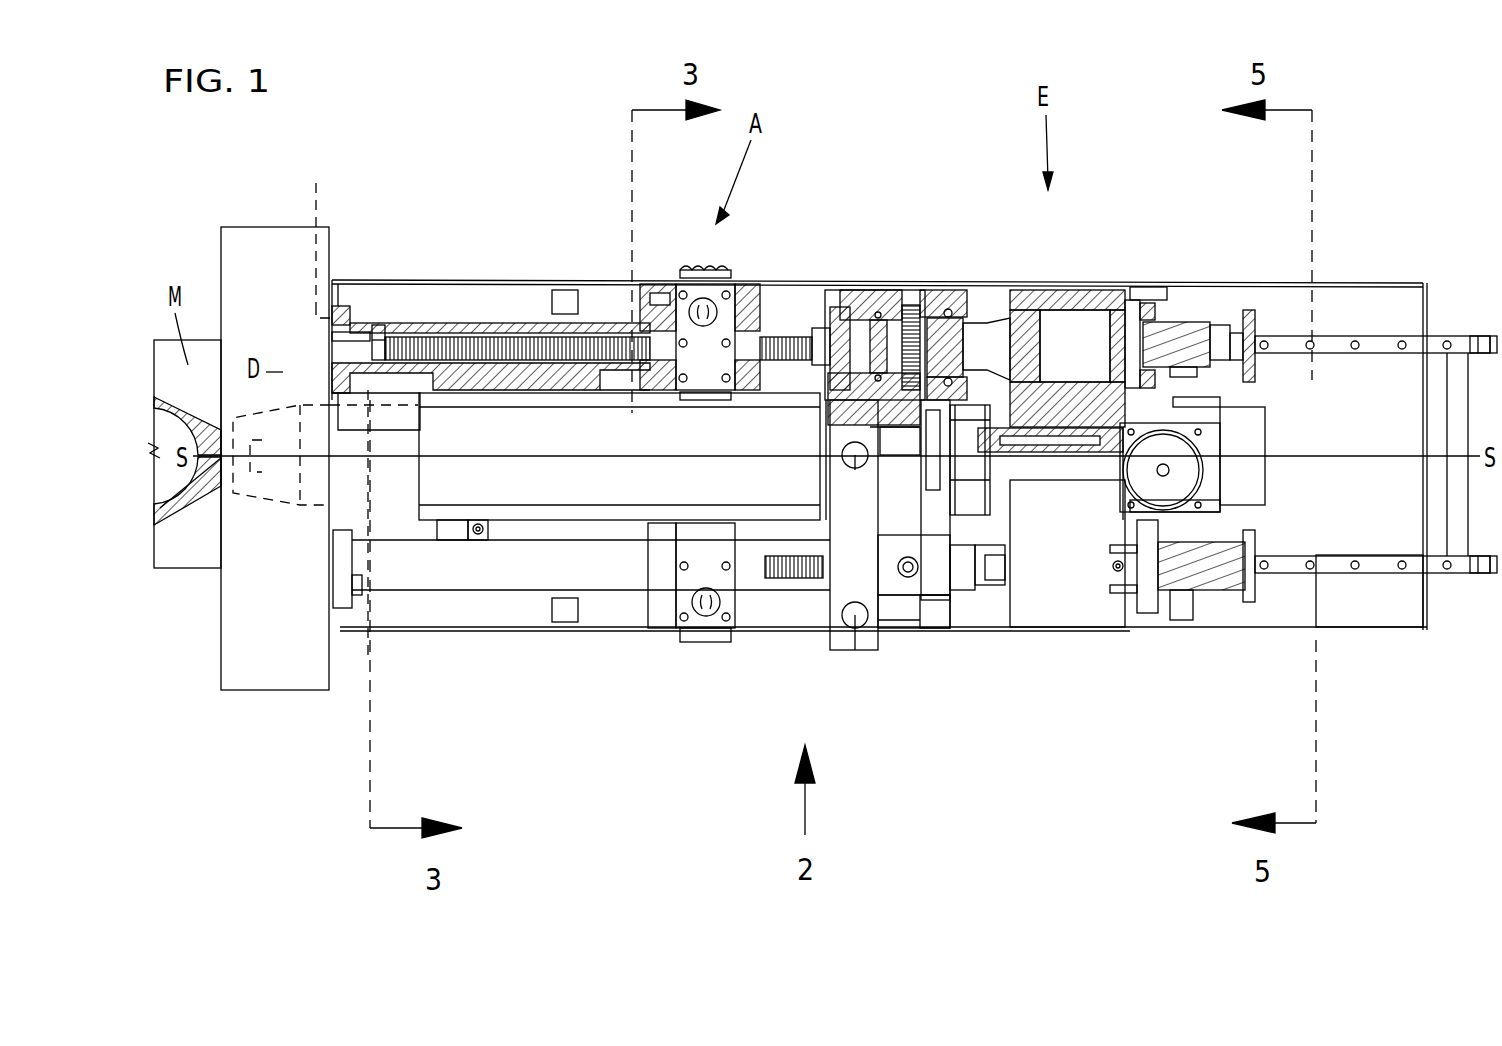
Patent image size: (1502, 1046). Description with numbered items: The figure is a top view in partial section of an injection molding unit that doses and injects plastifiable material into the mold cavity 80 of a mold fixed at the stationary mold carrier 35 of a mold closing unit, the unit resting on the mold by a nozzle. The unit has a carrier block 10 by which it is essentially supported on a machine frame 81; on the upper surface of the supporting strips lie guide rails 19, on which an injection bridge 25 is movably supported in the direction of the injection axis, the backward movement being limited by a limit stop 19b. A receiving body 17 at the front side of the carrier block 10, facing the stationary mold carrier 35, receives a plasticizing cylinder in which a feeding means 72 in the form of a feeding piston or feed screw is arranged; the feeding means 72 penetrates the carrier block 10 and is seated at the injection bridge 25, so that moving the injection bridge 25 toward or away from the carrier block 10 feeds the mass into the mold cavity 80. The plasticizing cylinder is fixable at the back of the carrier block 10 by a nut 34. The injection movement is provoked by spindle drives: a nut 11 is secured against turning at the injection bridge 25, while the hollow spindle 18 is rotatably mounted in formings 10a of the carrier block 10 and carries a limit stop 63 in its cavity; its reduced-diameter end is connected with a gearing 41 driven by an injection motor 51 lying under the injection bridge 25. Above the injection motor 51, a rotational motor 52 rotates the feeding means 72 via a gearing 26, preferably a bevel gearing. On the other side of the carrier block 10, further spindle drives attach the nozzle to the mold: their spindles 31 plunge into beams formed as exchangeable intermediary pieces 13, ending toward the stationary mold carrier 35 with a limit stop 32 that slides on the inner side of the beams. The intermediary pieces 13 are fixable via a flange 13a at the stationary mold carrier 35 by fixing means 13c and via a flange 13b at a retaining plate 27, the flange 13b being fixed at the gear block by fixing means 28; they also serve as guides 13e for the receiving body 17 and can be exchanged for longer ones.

The carrier block 10 is at (880, 290).
The formings of the carrier block 10a is at (950, 628).
The nut 11 is at (1122, 280).
The intermediary pieces 13 is at (438, 318).
The flange 13a is at (344, 318).
The flange 13b is at (640, 300).
The fixing means 13c is at (316, 196).
The guides 13e is at (518, 320).
The receiving body 17 is at (727, 446).
The spindle 18 is at (1202, 320).
The guide rails 19 is at (1380, 334).
The limit stop 19b is at (1484, 334).
The injection bridge 25 is at (1035, 290).
The gearing 26 is at (1232, 424).
The retaining plate 27 is at (748, 284).
The fixing means 28 is at (652, 283).
The spindles 31 is at (460, 330).
The limit stop 32 is at (398, 321).
The nut 34 is at (930, 600).
The stationary mold carrier 35 is at (287, 668).
The gearing 41 is at (940, 300).
The injection motor 51 is at (1260, 418).
The rotational motor 52 is at (1190, 487).
The limit stop 63 is at (1248, 310).
The feeding means 72 is at (989, 492).
The mold cavity 80 is at (163, 486).
The machine frame 81 is at (1378, 612).